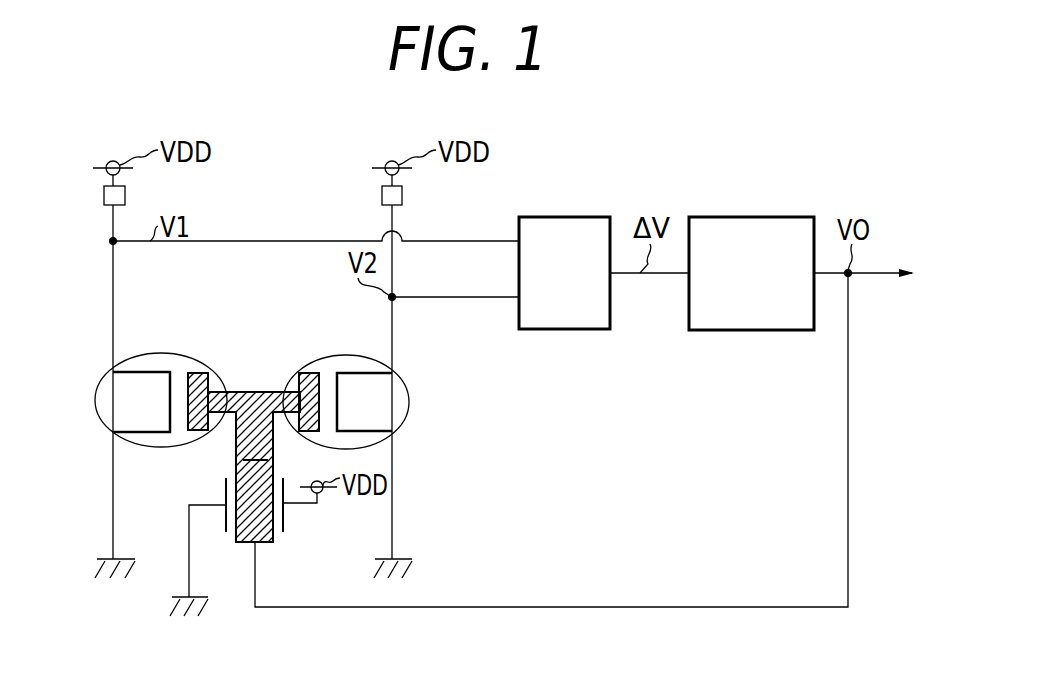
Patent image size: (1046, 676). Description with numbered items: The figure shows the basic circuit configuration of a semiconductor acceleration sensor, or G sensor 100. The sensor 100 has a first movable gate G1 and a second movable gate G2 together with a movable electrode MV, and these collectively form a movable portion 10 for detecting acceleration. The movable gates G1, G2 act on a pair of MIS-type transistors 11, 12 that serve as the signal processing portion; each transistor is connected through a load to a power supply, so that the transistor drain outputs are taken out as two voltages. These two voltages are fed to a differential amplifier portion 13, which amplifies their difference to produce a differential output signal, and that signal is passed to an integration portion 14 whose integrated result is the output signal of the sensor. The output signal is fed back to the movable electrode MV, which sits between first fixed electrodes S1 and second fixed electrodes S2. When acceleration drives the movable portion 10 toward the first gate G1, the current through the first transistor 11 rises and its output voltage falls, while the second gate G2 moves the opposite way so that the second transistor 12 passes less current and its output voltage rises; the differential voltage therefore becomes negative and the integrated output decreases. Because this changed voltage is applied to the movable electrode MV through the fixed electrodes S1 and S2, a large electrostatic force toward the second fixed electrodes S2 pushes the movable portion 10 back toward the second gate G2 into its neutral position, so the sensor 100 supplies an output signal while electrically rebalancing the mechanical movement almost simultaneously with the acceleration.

The sensor 100 is at (257, 172).
The MIS-type transistor 11 is at (157, 353).
The movable gate G1 is at (195, 373).
The movable portion 10 is at (248, 392).
The movable gate G2 is at (305, 373).
The MIS-type transistor 12 is at (352, 355).
The differential amplifier portion 13 is at (540, 329).
The integration portion 14 is at (717, 330).
The movable electrode MV is at (246, 540).
The first fixed electrodes S1 is at (226, 490).
The second fixed electrodes S2 is at (286, 530).